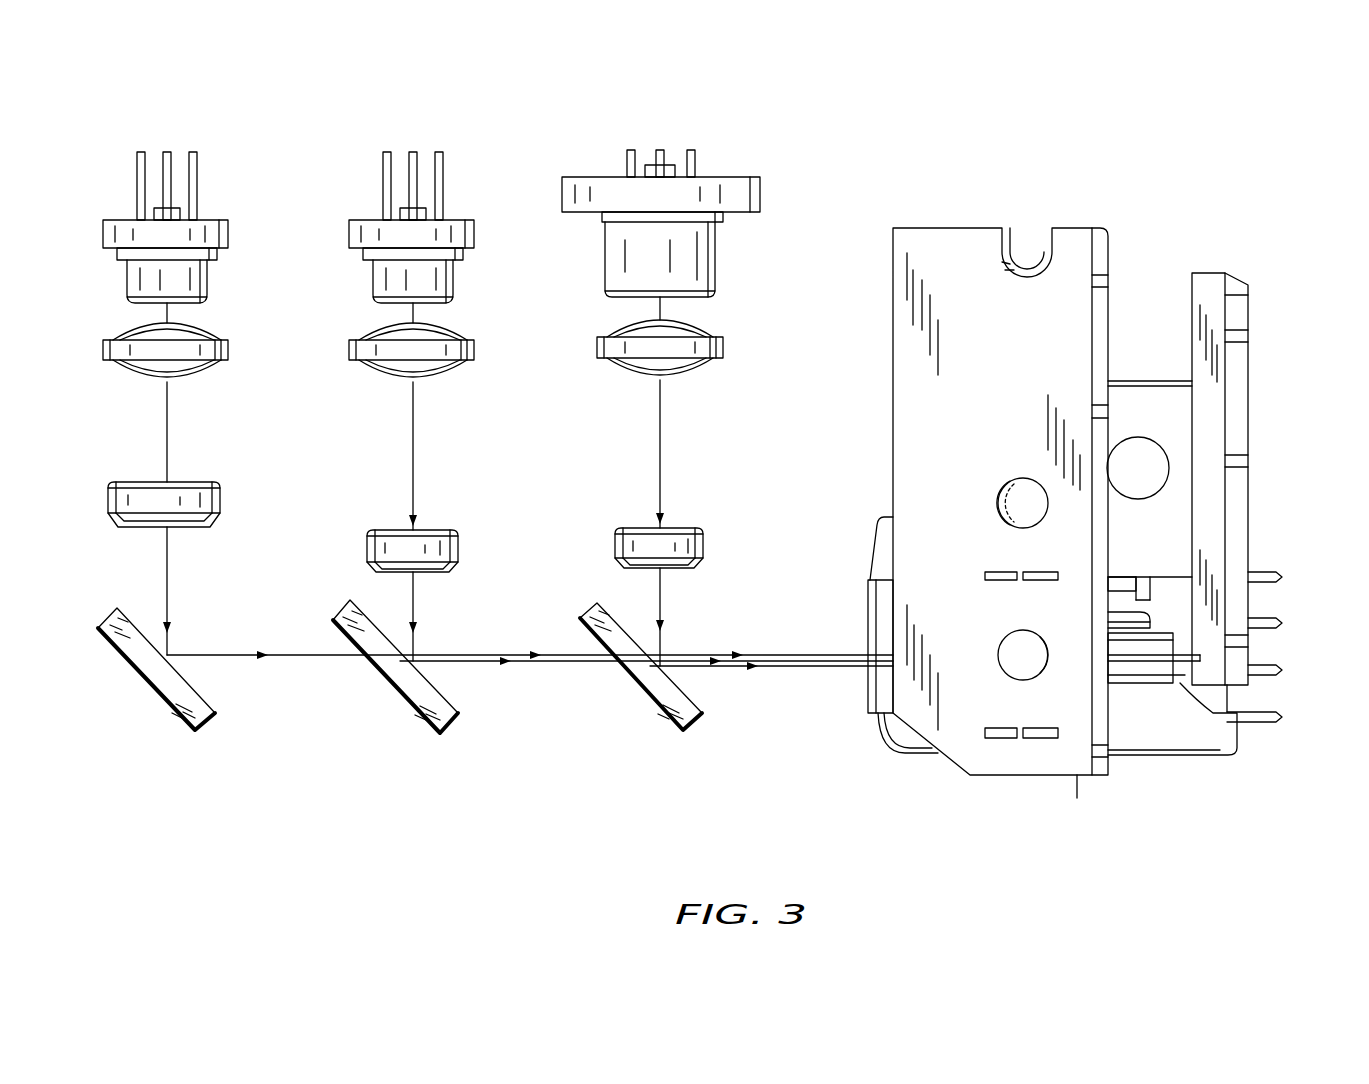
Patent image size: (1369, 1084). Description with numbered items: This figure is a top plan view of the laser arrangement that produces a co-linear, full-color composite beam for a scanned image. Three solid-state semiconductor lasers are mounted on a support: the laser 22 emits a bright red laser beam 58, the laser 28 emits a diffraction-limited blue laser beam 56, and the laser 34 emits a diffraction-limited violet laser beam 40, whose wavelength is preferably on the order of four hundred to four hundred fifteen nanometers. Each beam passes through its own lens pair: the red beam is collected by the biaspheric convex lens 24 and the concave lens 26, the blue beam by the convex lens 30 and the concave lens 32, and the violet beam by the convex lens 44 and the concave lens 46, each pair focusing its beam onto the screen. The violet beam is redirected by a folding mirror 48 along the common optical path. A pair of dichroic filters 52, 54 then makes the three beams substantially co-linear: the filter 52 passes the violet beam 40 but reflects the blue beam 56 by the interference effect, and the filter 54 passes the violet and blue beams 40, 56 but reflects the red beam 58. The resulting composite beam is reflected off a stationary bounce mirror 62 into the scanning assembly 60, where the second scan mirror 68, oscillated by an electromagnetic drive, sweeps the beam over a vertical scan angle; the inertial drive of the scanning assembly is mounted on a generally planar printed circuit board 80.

The semiconductor laser 22 is at (708, 266).
The biaspheric convex lens 24 is at (723, 347).
The concave lens 26 is at (703, 545).
The semiconductor laser 28 is at (455, 282).
The biaspheric convex lens 30 is at (475, 352).
The concave lens 32 is at (458, 545).
The semiconductor laser 34 is at (207, 282).
The violet laser beam 40 is at (167, 588).
The biaspheric convex lens 44 is at (228, 352).
The concave lens 46 is at (220, 497).
The folding mirror 48 is at (187, 702).
The dichroic filter 52 is at (447, 700).
The dichroic filter 54 is at (695, 700).
The blue laser beam 56 is at (413, 600).
The red laser beam 58 is at (660, 592).
The scanning assembly 60 is at (1094, 490).
The stationary bounce mirror 62 is at (1243, 357).
The second scan mirror 68 is at (1152, 668).
The printed circuit board 80 is at (937, 250).